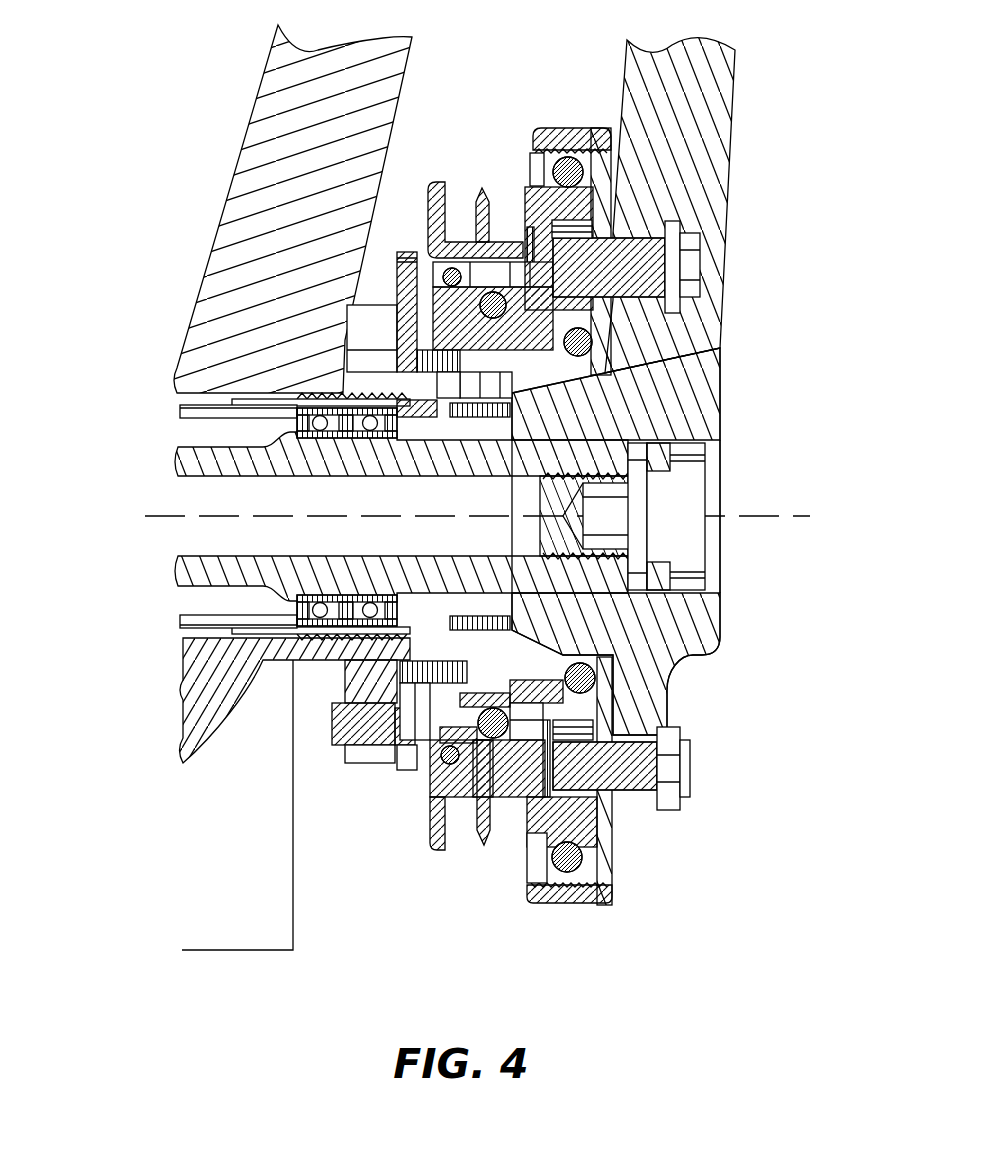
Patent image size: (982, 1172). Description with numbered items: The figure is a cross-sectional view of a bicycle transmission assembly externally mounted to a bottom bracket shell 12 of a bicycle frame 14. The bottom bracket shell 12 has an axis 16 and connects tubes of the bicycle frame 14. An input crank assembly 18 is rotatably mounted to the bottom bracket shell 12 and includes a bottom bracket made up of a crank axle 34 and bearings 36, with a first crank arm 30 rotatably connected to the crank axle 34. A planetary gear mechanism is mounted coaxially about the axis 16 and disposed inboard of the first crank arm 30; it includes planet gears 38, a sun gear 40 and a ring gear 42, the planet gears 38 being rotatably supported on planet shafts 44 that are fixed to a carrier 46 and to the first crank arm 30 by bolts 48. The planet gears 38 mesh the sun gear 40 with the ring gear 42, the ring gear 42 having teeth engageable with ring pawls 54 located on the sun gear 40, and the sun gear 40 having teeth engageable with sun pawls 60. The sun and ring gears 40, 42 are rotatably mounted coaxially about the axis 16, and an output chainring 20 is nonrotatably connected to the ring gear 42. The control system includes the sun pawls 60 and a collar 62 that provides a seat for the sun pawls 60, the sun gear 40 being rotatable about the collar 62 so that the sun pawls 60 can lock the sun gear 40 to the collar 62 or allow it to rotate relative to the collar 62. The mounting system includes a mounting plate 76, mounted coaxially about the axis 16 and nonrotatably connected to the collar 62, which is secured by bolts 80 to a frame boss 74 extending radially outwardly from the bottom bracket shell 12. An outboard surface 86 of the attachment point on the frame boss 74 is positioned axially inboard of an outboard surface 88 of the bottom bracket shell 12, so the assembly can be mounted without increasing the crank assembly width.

The bottom bracket shell 12 is at (318, 660).
The bicycle frame 14 is at (248, 197).
The axis 16 is at (755, 512).
The input crank assembly 18 is at (727, 412).
The output chainring 20 is at (440, 200).
The first crank arm 30 is at (695, 170).
The crank axle 34 is at (195, 460).
The bearings 36 is at (318, 418).
The planet gears 38 is at (545, 205).
The sun gear 40 is at (560, 352).
The ring gear 42 is at (487, 215).
The planet shafts 44 is at (568, 160).
The carrier 46 is at (595, 128).
The bolts 48 is at (655, 243).
The ring pawls 54 is at (585, 278).
The sun pawls 60 is at (640, 378).
The collar 62 is at (385, 405).
The frame boss 74 is at (360, 748).
The mounting plate 76 is at (407, 255).
The bolts 80 is at (468, 760).
The outboard surface 86 is at (396, 760).
The outboard surface 88 is at (413, 770).